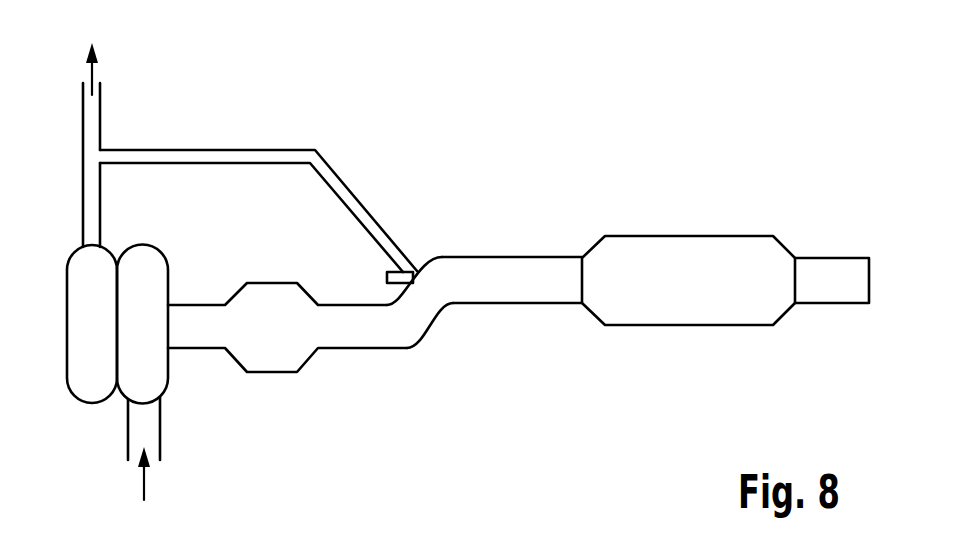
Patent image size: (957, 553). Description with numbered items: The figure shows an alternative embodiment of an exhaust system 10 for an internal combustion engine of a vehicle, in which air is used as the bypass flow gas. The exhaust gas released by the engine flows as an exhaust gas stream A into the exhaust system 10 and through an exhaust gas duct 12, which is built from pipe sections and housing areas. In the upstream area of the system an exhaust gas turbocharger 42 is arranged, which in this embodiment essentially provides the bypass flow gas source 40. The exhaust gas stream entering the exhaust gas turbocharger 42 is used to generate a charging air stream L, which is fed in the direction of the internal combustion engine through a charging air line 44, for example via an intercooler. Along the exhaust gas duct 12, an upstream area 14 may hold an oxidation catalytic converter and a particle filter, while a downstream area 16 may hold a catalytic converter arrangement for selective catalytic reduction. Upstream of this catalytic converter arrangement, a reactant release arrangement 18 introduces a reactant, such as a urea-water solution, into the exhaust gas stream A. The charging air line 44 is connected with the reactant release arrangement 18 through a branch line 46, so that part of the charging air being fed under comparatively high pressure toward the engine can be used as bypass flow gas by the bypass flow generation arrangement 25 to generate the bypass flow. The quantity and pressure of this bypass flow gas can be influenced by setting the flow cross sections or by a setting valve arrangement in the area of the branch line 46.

The exhaust system 10 is at (595, 148).
The exhaust gas duct 12 is at (437, 326).
The upstream area 14 is at (281, 380).
The downstream area 16 is at (664, 228).
The reactant release arrangement 18 is at (430, 233).
The bypass flow generation arrangement 25 is at (396, 308).
The bypass flow gas source 40 is at (102, 444).
The exhaust gas turbocharger 42 is at (163, 252).
The charging air line 44 is at (100, 117).
The branch line 46 is at (277, 150).
The charging air stream L is at (95, 70).
The exhaust gas stream A is at (145, 480).